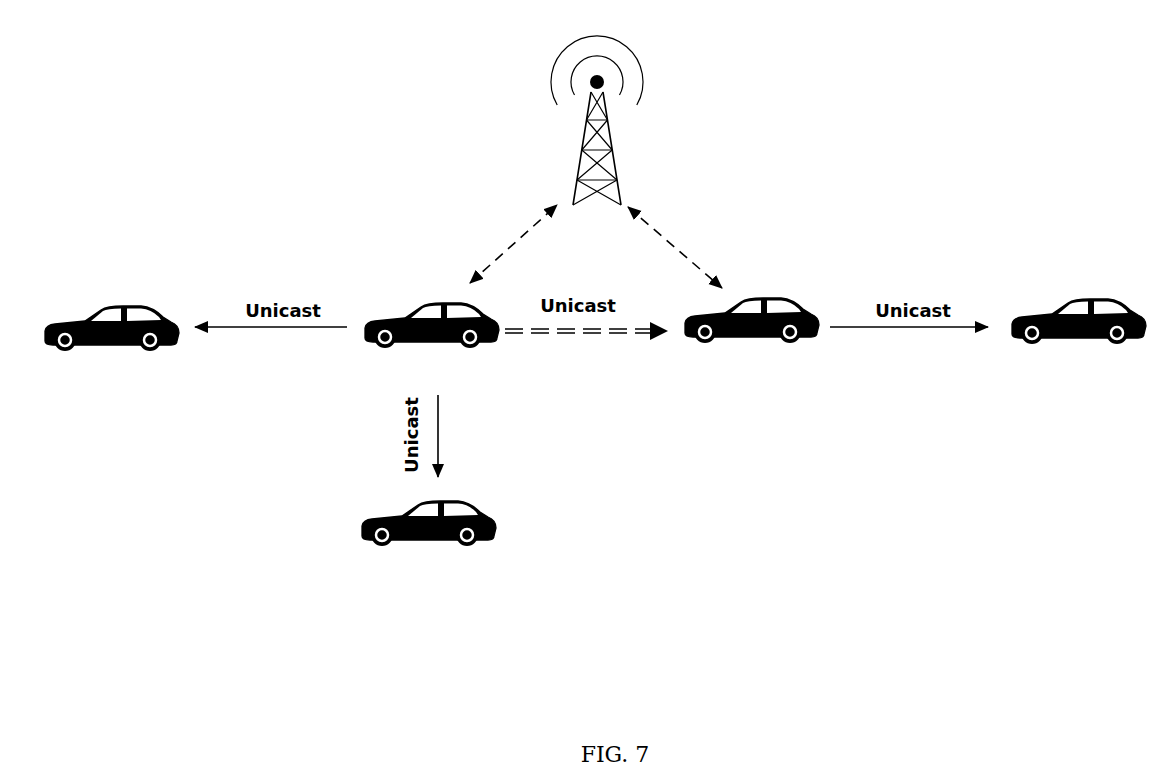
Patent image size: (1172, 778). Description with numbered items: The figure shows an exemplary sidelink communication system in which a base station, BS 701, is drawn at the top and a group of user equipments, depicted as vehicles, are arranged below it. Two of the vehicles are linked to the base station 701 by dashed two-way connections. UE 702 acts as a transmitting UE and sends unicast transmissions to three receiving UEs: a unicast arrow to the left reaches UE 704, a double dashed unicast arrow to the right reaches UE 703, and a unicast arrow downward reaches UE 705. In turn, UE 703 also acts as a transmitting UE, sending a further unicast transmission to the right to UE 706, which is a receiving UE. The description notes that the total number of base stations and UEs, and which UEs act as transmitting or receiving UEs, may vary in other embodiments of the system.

The BS 701 is at (622, 120).
The UE 702 is at (432, 348).
The UE 703 is at (752, 345).
The UE 704 is at (112, 353).
The UE 705 is at (429, 546).
The UE 706 is at (1079, 344).